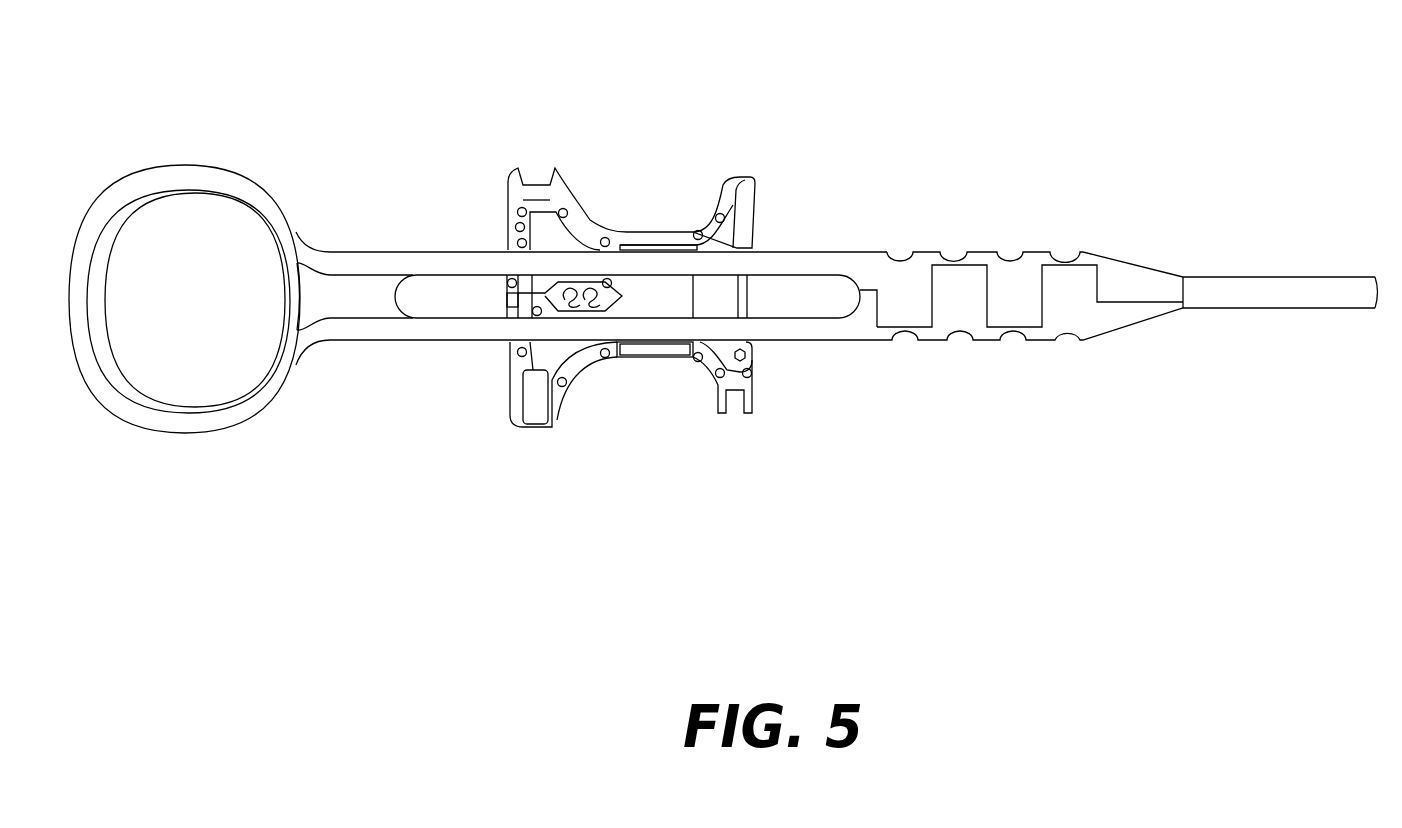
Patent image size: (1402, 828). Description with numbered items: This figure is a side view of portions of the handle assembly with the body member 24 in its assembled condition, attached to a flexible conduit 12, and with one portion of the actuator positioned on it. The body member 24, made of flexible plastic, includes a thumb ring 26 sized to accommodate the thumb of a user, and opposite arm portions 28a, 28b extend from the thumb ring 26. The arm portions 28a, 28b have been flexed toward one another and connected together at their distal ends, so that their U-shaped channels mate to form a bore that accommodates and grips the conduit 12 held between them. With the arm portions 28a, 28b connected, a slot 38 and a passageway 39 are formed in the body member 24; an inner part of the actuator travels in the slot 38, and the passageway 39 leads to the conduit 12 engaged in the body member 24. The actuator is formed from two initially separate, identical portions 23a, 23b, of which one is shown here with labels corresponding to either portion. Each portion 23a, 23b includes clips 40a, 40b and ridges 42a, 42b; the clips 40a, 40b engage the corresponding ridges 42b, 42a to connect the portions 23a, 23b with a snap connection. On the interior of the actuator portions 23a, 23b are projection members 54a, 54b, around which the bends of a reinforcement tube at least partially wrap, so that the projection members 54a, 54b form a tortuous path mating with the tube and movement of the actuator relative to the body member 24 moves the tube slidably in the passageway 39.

The conduit 12 is at (1213, 307).
The actuator portion 23a is at (578, 367).
The actuator portion 23b is at (655, 349).
The body member 24 is at (963, 290).
The thumb ring 26 is at (163, 178).
The arm portion 28a is at (887, 277).
The arm portion 28b is at (957, 340).
The slot 38 is at (420, 300).
The passageway 39 is at (852, 297).
The clip 40a is at (753, 185).
The clip 40b is at (535, 395).
The ridge 42a is at (537, 190).
The ridge 42b is at (737, 392).
The projection member 54a is at (573, 290).
The projection member 54b is at (591, 290).